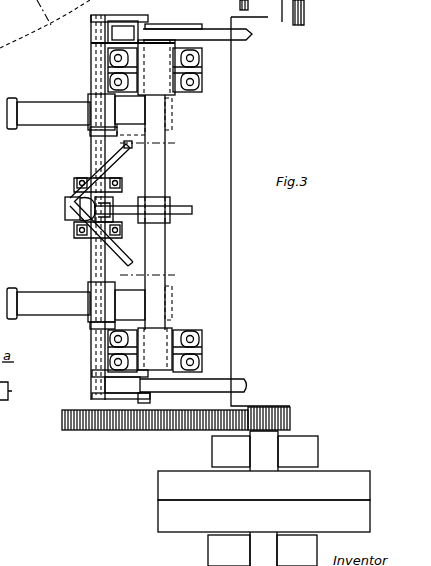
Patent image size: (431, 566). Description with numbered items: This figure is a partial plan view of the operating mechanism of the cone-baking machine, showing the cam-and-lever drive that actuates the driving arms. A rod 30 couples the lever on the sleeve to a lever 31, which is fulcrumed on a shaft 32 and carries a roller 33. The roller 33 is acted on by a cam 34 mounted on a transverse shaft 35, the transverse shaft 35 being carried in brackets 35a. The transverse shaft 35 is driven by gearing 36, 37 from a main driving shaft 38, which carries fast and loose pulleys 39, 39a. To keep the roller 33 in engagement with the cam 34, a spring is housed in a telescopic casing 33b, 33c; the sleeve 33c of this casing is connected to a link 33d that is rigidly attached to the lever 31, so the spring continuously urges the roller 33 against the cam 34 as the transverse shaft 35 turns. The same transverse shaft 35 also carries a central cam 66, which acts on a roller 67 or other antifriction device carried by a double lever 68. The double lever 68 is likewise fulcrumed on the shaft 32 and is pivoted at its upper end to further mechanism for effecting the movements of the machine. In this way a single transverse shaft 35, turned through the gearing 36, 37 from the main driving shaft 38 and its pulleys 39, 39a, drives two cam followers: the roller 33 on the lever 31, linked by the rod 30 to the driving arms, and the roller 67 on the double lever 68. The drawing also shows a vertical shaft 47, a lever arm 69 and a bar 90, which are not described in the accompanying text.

The rod 30 is at (222, 36).
The lever 31 is at (108, 30).
The shaft 32 is at (100, 156).
The roller 33 is at (118, 387).
The telescopic casing 33b is at (49, 103).
The sleeve 33c is at (172, 115).
The link 33d is at (95, 130).
The cam 34 is at (187, 25).
The transverse shaft 35 is at (198, 266).
The brackets 35a is at (180, 90).
The gearing 36 is at (128, 413).
The gearing 37 is at (292, 421).
The main driving shaft 38 is at (272, 447).
The fast pulley 39 is at (160, 487).
The loose pulley 39a is at (165, 517).
The vertical shaft 47 is at (168, 151).
The central cam 66 is at (183, 206).
The roller 67 is at (110, 208).
The double lever 68 is at (120, 224).
The lever arm 69 is at (113, 160).
The bar 90 is at (318, 12).